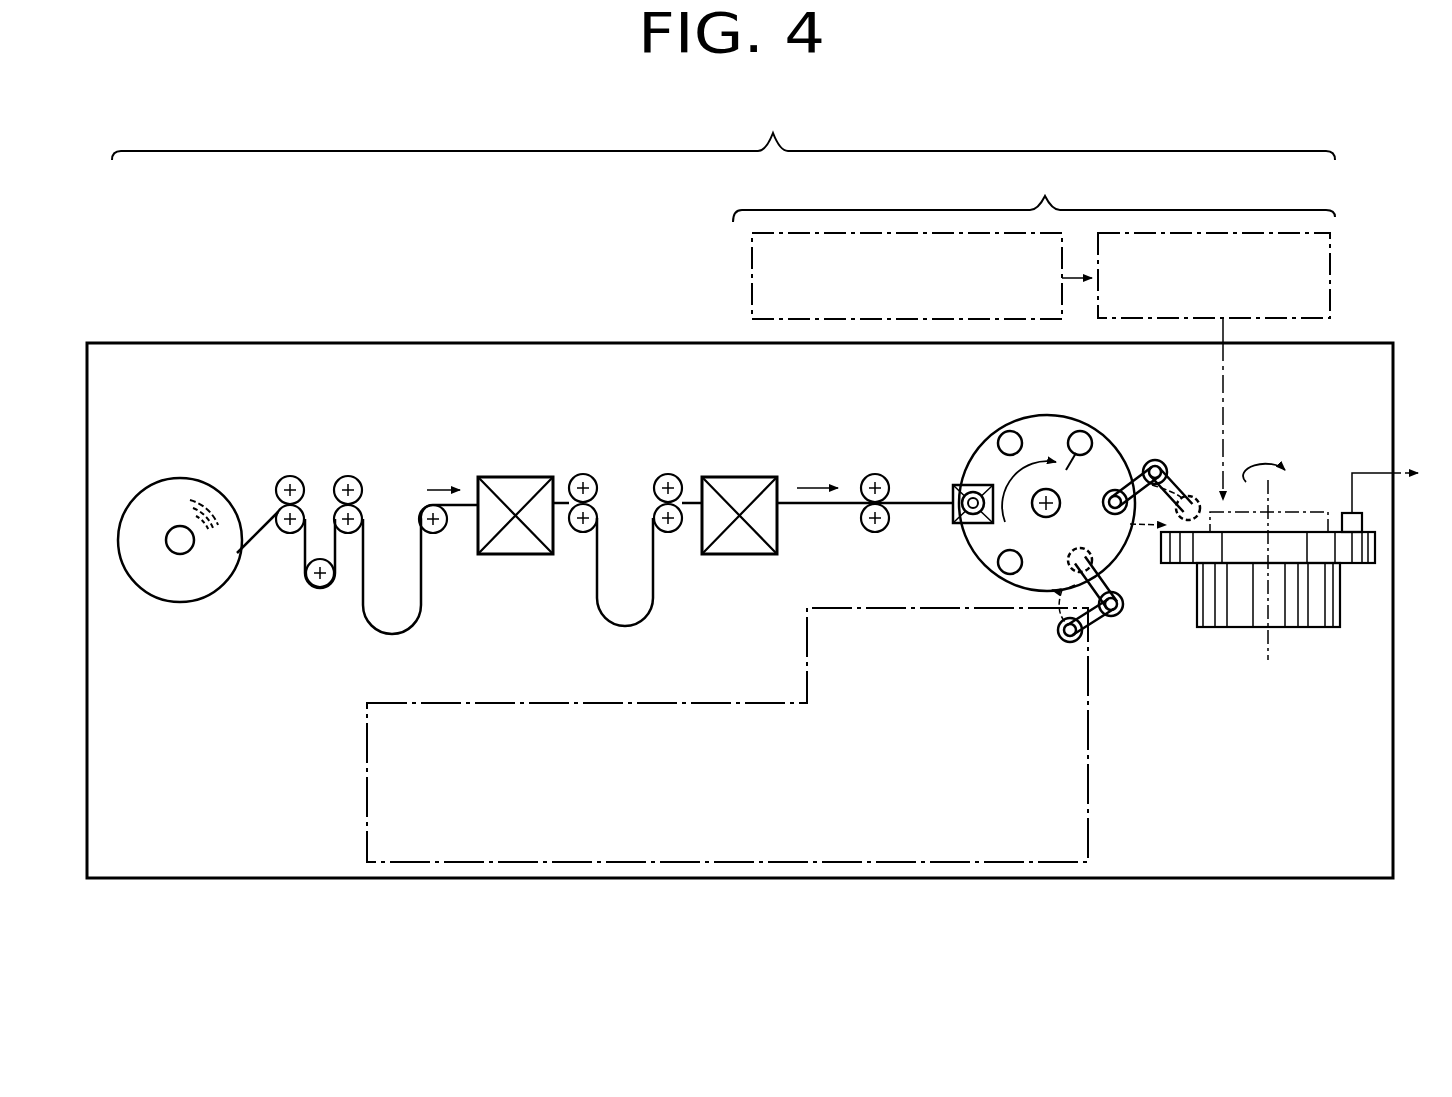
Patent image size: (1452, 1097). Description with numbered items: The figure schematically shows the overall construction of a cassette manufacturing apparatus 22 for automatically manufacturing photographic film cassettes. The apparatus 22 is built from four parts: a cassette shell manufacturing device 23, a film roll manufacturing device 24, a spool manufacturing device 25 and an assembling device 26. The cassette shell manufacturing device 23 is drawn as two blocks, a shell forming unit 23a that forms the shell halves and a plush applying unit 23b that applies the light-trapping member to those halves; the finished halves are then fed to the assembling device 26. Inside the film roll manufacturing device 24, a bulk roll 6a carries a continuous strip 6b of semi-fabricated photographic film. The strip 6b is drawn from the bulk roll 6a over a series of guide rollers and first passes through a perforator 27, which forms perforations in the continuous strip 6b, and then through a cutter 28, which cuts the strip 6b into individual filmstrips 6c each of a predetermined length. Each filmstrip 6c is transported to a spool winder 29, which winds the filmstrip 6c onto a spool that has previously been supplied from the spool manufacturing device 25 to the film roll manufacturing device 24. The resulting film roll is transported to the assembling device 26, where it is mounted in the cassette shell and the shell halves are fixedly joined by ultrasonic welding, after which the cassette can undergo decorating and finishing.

The cassette manufacturing apparatus 22 is at (723, 129).
The cassette shell manufacturing device 23 is at (1043, 331).
The shell forming unit 23a is at (750, 250).
The plush applying unit 23b is at (1333, 245).
The film roll manufacturing device 24 is at (572, 445).
The spool manufacturing device 25 is at (363, 743).
The assembling device 26 is at (1223, 617).
The perforator 27 is at (525, 554).
The cutter 28 is at (742, 554).
The spool winder 29 is at (967, 483).
The bulk roll 6a is at (172, 590).
The continuous strip 6b is at (423, 580).
The filmstrip 6c is at (833, 505).